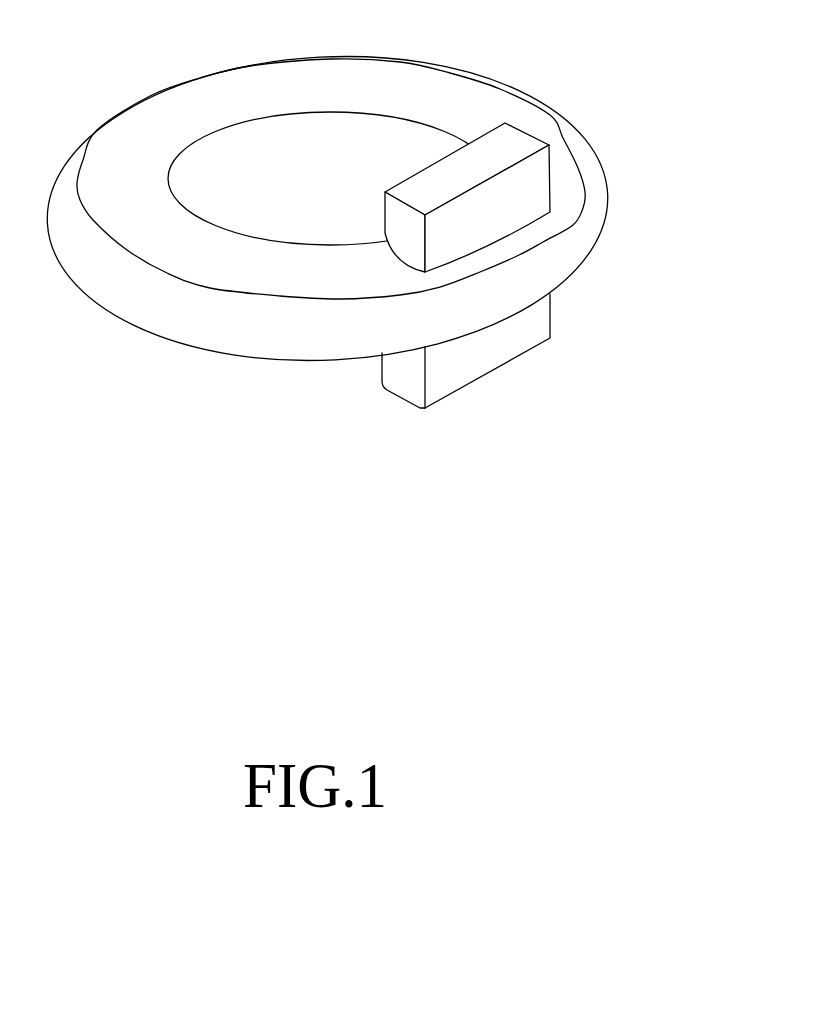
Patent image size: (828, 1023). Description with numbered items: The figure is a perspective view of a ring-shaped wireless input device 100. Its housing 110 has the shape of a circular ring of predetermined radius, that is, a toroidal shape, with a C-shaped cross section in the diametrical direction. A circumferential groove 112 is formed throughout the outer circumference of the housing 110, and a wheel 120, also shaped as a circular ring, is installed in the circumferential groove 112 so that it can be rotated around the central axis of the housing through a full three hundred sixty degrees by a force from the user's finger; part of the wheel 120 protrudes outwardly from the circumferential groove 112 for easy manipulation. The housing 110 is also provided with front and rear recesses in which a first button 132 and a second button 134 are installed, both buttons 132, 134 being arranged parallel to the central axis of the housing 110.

The wireless input device 100 is at (367, 270).
The housing 110 is at (486, 87).
The circumferential groove 112 is at (583, 172).
The wheel 120 is at (603, 199).
The first button 132 is at (535, 134).
The second button 134 is at (546, 319).